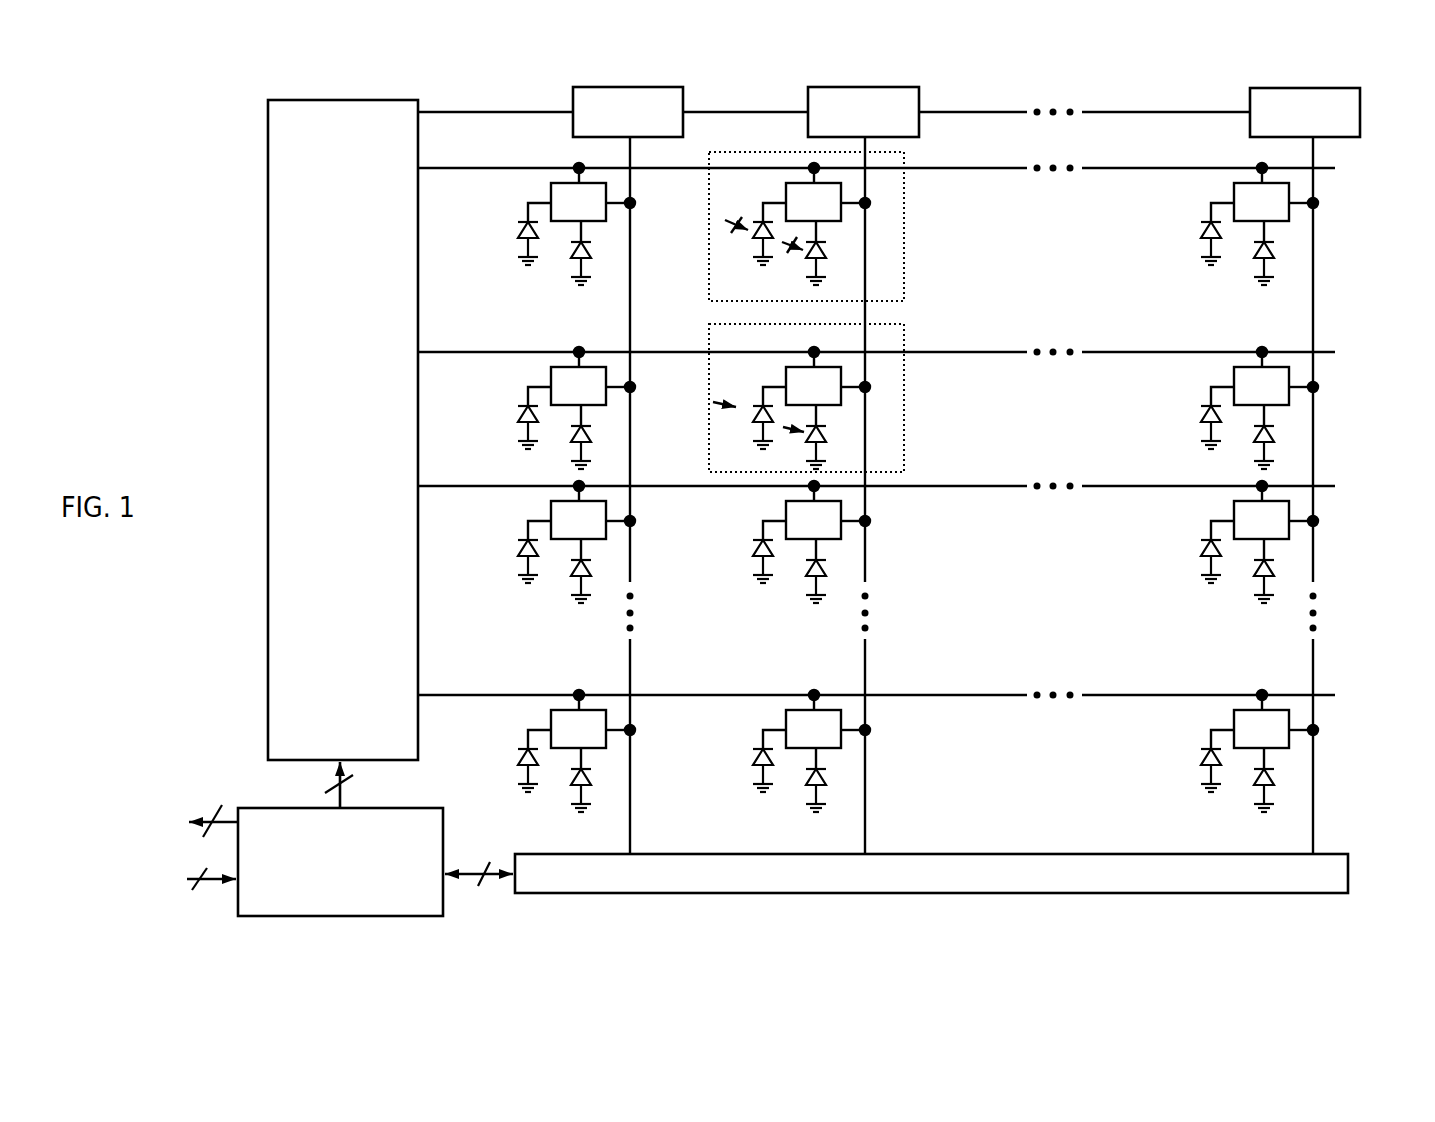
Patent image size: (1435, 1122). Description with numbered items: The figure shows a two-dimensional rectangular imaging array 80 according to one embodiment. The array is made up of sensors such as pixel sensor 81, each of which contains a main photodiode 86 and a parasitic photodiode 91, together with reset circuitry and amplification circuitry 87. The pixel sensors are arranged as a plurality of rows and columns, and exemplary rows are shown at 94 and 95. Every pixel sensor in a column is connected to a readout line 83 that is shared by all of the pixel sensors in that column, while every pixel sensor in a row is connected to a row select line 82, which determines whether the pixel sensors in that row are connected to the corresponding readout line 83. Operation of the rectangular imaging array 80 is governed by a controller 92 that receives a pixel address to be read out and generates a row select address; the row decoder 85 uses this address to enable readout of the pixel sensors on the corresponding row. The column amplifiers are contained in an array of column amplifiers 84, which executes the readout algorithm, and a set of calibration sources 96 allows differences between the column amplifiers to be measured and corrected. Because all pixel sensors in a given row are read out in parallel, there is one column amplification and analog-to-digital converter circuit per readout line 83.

The rectangular imaging array 80 is at (195, 289).
The pixel sensor 81 is at (904, 380).
The row select line 82 is at (956, 351).
The readout line 83 is at (631, 672).
The array of column amplifiers 84 is at (1348, 875).
The row decoder 85 is at (269, 385).
The main photodiode 86 is at (506, 423).
The reset circuitry and amplification circuitry 87 is at (589, 354).
The parasitic photodiode 91 is at (562, 445).
The controller 92 is at (442, 885).
The row 94 is at (1338, 203).
The row 95 is at (1340, 420).
The calibration sources 96 is at (683, 90).